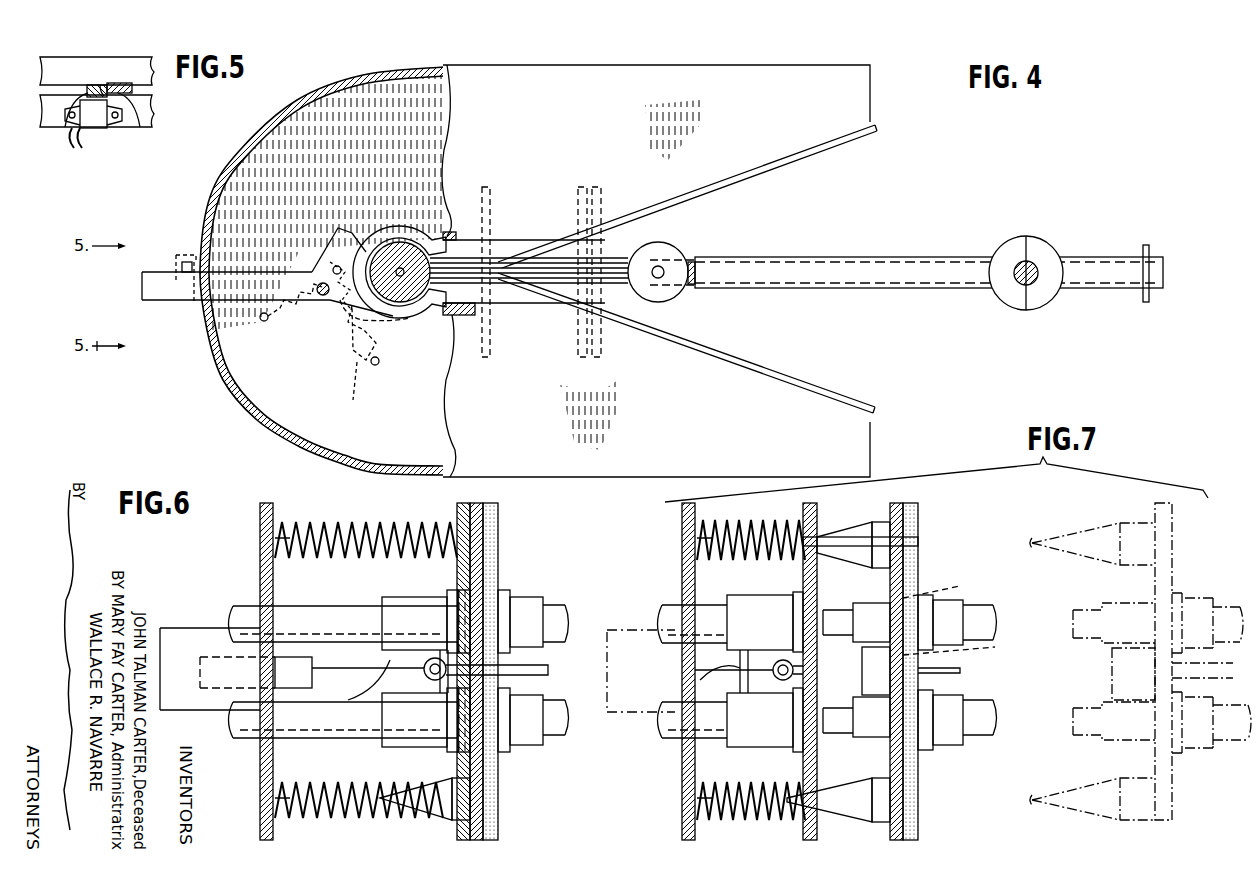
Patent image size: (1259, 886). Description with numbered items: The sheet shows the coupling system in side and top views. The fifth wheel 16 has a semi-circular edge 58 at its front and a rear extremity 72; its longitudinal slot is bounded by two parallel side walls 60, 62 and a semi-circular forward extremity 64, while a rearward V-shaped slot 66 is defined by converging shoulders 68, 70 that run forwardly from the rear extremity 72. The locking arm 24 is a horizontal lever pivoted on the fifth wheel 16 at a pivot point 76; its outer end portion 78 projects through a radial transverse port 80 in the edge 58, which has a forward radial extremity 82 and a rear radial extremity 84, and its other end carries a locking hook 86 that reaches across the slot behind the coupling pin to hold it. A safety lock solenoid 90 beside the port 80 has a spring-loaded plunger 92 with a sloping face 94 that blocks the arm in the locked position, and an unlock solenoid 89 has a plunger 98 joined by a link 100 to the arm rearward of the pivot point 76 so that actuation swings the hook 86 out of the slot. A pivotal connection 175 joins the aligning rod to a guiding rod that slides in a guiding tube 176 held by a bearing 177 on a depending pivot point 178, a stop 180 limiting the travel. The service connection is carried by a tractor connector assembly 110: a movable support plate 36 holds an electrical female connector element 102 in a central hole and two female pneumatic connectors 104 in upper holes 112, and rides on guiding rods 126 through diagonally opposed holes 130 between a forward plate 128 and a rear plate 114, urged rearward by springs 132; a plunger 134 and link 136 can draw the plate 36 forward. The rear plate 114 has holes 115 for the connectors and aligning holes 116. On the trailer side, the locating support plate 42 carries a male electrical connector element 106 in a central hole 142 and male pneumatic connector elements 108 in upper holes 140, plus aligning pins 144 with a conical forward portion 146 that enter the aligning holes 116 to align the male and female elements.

In FIG. 5, the fifth wheel 16 is at (90, 70).
In FIG. 5, the locking arm 24 is at (117, 97).
In FIG. 4, the locking arm 24 is at (335, 313).
In FIG. 6, the movable support plate 36 is at (476, 505).
In FIG. 7, the movable support plate 36 is at (817, 506).
In FIG. 7, the locating support plate 42 is at (918, 530).
In FIG. 4, the semi-circular edge 58 is at (222, 383).
In FIG. 4, the side wall 60 is at (462, 316).
In FIG. 4, the side wall 62 is at (446, 232).
In FIG. 4, the semi-circular forward extremity 64 is at (360, 250).
In FIG. 4, the V-shaped slot 66 is at (800, 172).
In FIG. 4, the shoulder 68 is at (830, 400).
In FIG. 4, the shoulder 70 is at (705, 176).
In FIG. 4, the rear extremity 72 is at (870, 100).
In FIG. 4, the pivot point 76 is at (323, 282).
In FIG. 4, the outer end portion 78 is at (142, 285).
In FIG. 5, the radial transverse port 80 is at (53, 92).
In FIG. 4, the radial transverse port 80 is at (205, 216).
In FIG. 5, the forward radial extremity 82 is at (133, 88).
In FIG. 4, the forward radial extremity 82 is at (202, 305).
In FIG. 4, the rear radial extremity 84 is at (213, 200).
In FIG. 4, the locking hook 86 is at (408, 318).
In FIG. 4, the unlock solenoid 89 is at (355, 381).
In FIG. 5, the safety lock solenoid 90 is at (95, 128).
In FIG. 4, the safety lock solenoid 90 is at (182, 260).
In FIG. 5, the spring-loaded plunger 92 is at (92, 95).
In FIG. 5, the sloping face 94 is at (83, 88).
In FIG. 4, the plunger 98 is at (355, 332).
In FIG. 4, the link 100 is at (340, 314).
In FIG. 6, the electrical female connector element 102 is at (405, 650).
In FIG. 7, the electrical female connector element 102 is at (725, 650).
In FIG. 6, the female pneumatic connector 104 is at (388, 603).
In FIG. 7, the female pneumatic connector 104 is at (765, 608).
In FIG. 7, the male electrical connector element 106 is at (868, 668).
In FIG. 7, the male pneumatic connector element 108 is at (880, 606).
In FIG. 6, the tractor connector assembly 110 is at (310, 496).
In FIG. 6, the upper holes 112 is at (455, 603).
In FIG. 7, the upper holes 112 is at (812, 598).
In FIG. 6, the rear plate 114 is at (496, 520).
In FIG. 7, the rear plate 114 is at (905, 518).
In FIG. 6, the holes 115 is at (492, 650).
In FIG. 7, the holes 115 is at (962, 670).
In FIG. 6, the aligning holes 116 is at (425, 799).
In FIG. 7, the aligning holes 116 is at (817, 815).
In FIG. 6, the guiding rods 126 is at (368, 522).
In FIG. 7, the guiding rods 126 is at (765, 522).
In FIG. 6, the forward plate 128 is at (260, 524).
In FIG. 7, the forward plate 128 is at (682, 524).
In FIG. 6, the diagonally opposed holes 130 is at (458, 514).
In FIG. 7, the diagonally opposed holes 130 is at (817, 520).
In FIG. 6, the springs 132 is at (328, 522).
In FIG. 7, the springs 132 is at (726, 522).
In FIG. 6, the plunger 134 is at (298, 678).
In FIG. 6, the link 136 is at (356, 668).
In FIG. 7, the upper holes 140 is at (949, 581).
In FIG. 7, the central hole 142 is at (996, 646).
In FIG. 7, the aligning pins 144 is at (866, 530).
In FIG. 7, the conical forward portion 146 is at (840, 560).
In FIG. 4, the pivotal connection 175 is at (664, 250).
In FIG. 4, the guiding tube 176 is at (740, 257).
In FIG. 4, the bearing 177 is at (1048, 250).
In FIG. 4, the pivot point 178 is at (1032, 286).
In FIG. 4, the stop 180 is at (1149, 298).